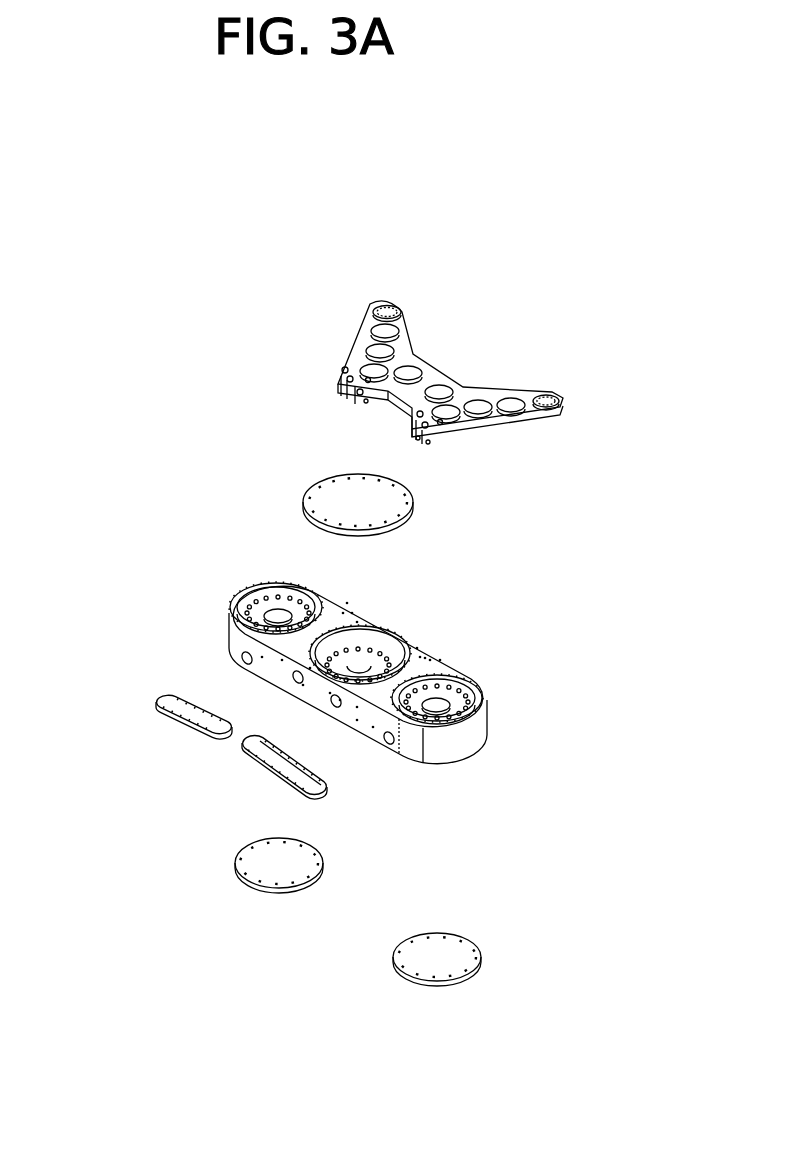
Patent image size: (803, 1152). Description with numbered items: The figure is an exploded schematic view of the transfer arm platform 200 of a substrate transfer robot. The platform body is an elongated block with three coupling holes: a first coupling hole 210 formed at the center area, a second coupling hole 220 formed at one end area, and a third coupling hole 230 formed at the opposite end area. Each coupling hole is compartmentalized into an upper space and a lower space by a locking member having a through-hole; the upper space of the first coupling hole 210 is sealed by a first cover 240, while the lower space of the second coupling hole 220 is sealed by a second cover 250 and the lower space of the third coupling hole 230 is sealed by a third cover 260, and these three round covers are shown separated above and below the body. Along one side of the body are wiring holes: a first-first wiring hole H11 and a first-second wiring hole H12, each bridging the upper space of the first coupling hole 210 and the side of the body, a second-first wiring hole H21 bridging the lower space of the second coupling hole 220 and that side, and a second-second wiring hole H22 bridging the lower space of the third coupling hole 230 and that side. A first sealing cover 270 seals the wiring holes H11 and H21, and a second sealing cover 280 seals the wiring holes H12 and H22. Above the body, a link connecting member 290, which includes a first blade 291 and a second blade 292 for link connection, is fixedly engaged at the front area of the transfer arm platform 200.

The transfer arm platform 200 is at (112, 196).
The first coupling hole 210 is at (372, 660).
The second coupling hole 220 is at (458, 687).
The third coupling hole 230 is at (268, 598).
The first cover 240 is at (322, 498).
The second cover 250 is at (412, 957).
The third cover 260 is at (253, 867).
The first sealing cover 270 is at (280, 775).
The second sealing cover 280 is at (182, 722).
The link connecting member 290 is at (442, 371).
The first blade 291 is at (552, 393).
The second blade 292 is at (384, 306).
The (1_1)-st wiring hole H11 is at (337, 710).
The (1_2)-nd wiring hole H12 is at (296, 682).
The (2_1)-st wiring hole H21 is at (390, 748).
The (2_2)-nd wiring hole H22 is at (240, 660).